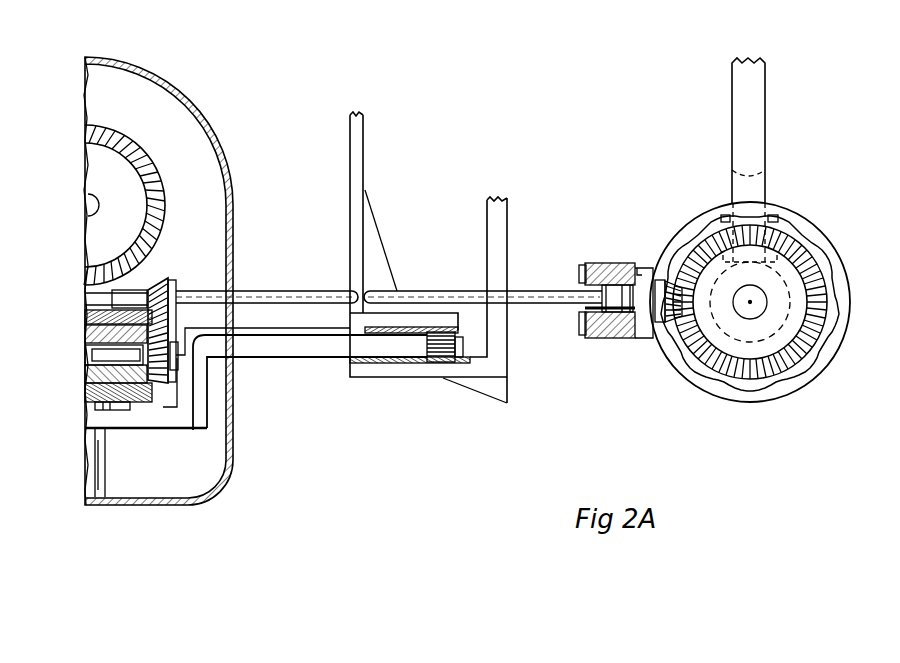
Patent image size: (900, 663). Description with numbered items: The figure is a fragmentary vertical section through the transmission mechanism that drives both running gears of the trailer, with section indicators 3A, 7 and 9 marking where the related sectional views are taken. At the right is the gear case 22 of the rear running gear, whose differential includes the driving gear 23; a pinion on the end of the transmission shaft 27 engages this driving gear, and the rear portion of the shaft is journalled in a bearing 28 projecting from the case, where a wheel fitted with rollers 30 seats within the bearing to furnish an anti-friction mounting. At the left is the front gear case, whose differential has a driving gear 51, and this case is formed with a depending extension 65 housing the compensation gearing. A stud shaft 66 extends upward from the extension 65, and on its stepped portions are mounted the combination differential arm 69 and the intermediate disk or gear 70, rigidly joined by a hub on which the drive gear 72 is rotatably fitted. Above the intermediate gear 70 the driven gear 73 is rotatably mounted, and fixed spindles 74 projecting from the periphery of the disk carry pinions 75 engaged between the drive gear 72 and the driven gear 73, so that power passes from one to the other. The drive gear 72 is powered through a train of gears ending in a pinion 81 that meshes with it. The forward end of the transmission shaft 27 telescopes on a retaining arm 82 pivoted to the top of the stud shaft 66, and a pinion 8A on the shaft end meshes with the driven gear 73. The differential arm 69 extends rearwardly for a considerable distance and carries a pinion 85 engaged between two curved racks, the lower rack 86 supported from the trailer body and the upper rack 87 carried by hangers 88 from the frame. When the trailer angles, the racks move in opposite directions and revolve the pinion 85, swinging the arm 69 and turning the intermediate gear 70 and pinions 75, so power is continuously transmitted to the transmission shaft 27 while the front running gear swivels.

The section line 3A- 3A is at (85, 127).
The section line 7- 7 is at (85, 352).
The section line 9- 9 is at (90, 540).
The bevel pinion 8A is at (172, 286).
The gear case 22 is at (790, 397).
The driving gear 23 is at (760, 373).
The transmission shaft 27 is at (297, 291).
The bearing 28 is at (667, 321).
The rollers 30 is at (636, 252).
The driving gear 51 is at (150, 165).
The depending extension 65 is at (197, 501).
The stud shaft 66 is at (104, 470).
The differential arm 69 is at (321, 358).
The intermediate disk or gear 70 is at (114, 355).
The drive gear 72 is at (158, 403).
The driven gear 73 is at (88, 346).
The spindles 74 is at (178, 364).
The pinions 75 is at (178, 384).
The pinion 81 is at (400, 328).
The retaining arm 82 is at (128, 293).
The pinion 85 is at (438, 365).
The curved rack 86 is at (398, 366).
The curved rack 87 is at (500, 346).
The hanger 88 is at (360, 163).